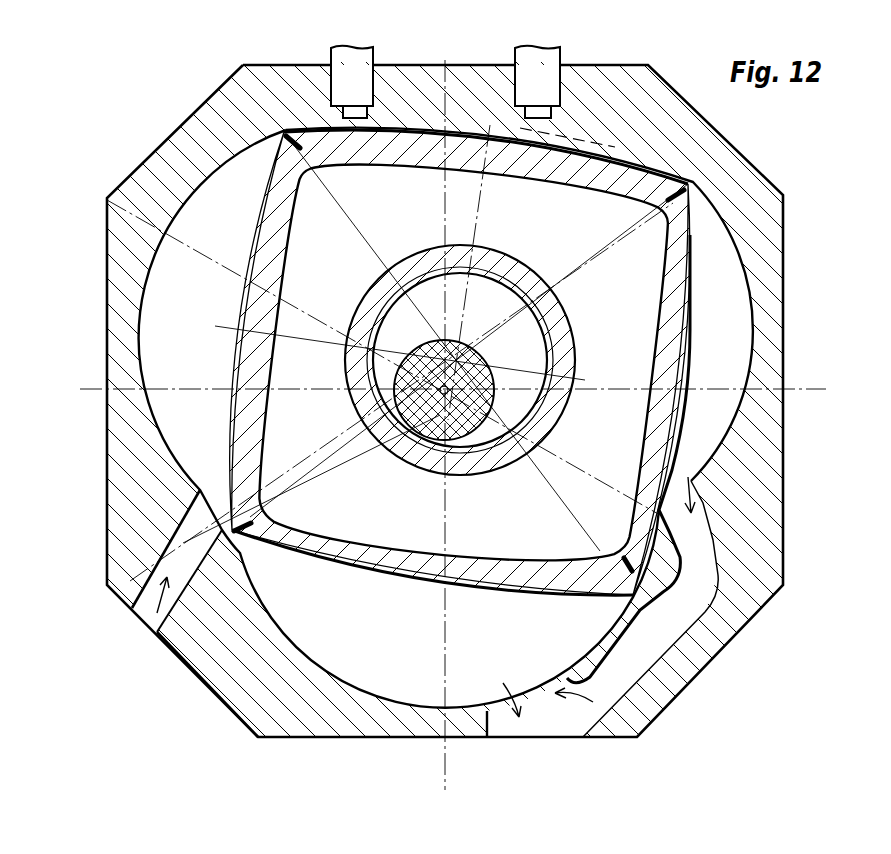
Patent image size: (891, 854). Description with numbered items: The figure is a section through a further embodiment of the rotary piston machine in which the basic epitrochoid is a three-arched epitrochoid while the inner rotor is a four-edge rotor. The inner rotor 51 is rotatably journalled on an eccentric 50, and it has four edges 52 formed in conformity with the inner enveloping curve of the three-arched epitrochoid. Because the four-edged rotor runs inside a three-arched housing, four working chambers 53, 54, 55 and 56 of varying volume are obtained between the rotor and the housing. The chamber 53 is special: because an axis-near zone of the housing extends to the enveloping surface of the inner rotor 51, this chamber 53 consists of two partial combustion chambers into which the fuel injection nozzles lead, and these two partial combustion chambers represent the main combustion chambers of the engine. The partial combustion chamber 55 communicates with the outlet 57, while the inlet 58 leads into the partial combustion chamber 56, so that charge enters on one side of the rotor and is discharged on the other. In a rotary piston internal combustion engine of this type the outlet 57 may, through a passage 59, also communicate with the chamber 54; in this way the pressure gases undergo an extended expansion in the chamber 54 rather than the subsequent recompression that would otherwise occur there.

The eccentric 50 is at (530, 357).
The inner rotor 51 is at (670, 307).
The edges 52 is at (690, 192).
The working chamber 53 is at (507, 128).
The working chamber 54 is at (717, 425).
The partial combustion chamber 55 is at (285, 623).
The partial combustion chamber 56 is at (157, 320).
The outlet 57 is at (545, 723).
The inlet 58 is at (143, 607).
The passage 59 is at (658, 632).